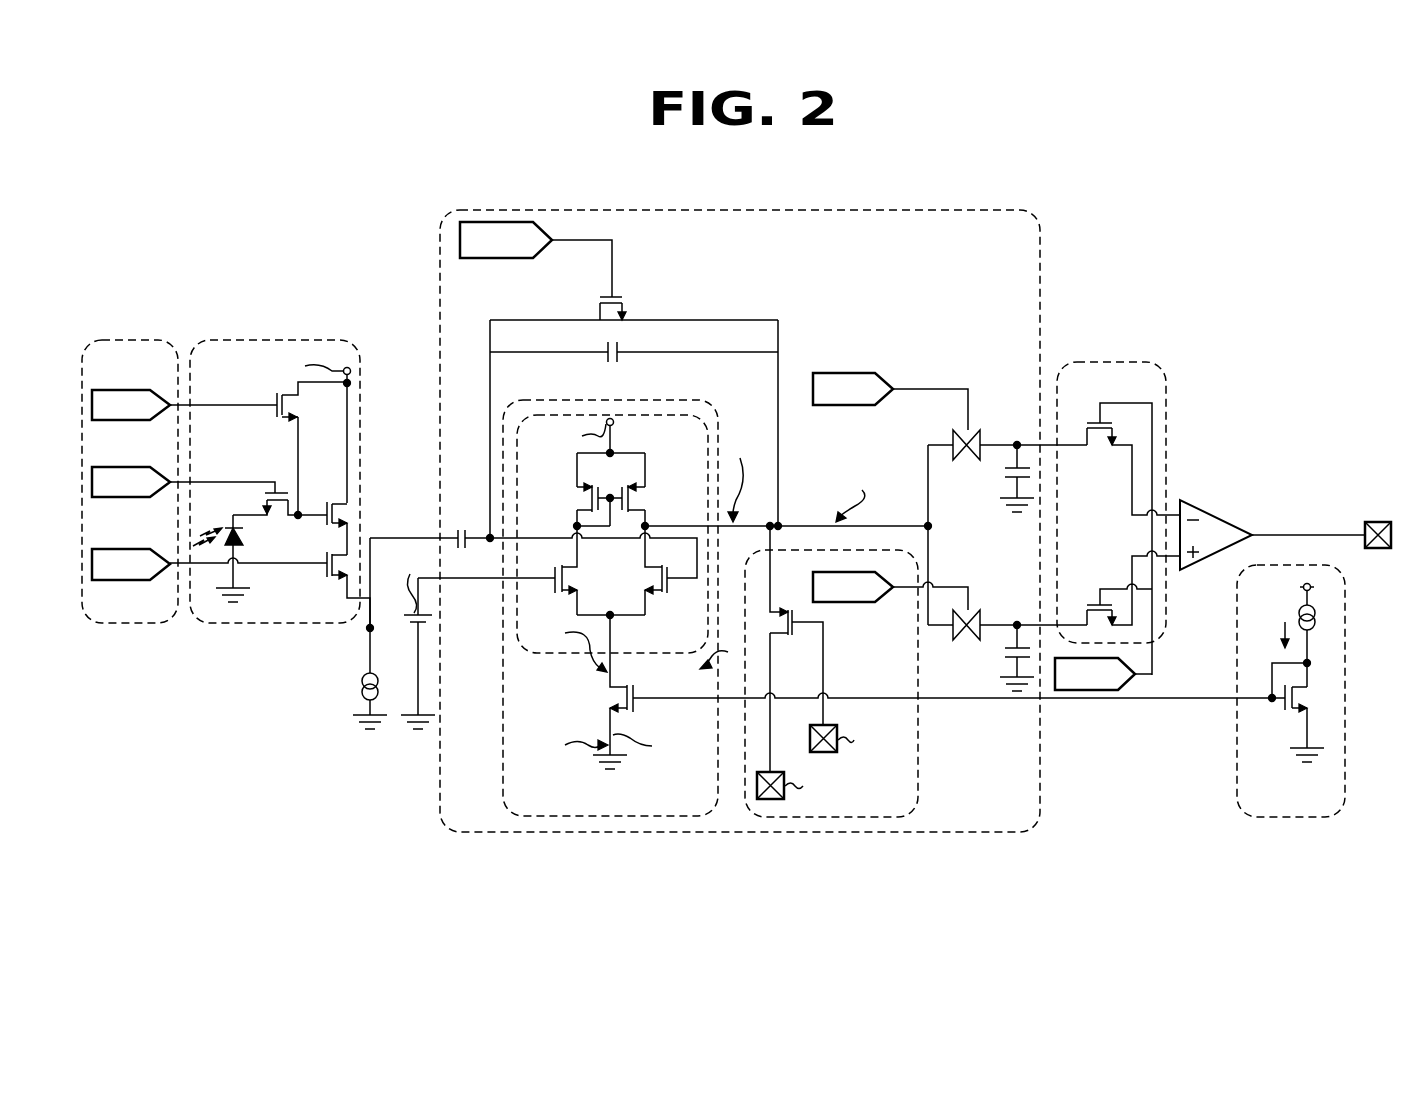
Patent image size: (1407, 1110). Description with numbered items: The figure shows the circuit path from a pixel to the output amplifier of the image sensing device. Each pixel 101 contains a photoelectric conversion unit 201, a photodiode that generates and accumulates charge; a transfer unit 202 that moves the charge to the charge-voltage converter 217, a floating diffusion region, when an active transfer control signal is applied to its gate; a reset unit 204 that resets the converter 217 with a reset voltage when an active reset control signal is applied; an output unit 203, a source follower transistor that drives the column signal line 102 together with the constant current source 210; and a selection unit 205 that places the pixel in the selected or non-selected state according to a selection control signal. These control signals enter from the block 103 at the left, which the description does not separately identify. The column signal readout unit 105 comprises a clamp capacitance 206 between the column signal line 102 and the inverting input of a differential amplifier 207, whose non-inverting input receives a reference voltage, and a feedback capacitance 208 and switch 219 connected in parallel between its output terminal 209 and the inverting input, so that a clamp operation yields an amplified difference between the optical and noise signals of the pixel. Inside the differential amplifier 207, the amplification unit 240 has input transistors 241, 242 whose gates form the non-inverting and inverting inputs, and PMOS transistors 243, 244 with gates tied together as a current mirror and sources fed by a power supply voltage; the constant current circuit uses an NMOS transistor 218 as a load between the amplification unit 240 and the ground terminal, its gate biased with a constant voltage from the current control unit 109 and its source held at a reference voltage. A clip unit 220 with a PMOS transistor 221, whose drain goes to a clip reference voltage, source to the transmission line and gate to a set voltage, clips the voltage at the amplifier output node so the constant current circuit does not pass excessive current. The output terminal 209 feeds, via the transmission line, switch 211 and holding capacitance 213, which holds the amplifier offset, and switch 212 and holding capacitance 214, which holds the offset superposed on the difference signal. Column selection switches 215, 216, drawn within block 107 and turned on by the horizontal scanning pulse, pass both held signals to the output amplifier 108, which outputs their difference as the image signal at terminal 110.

The pixel 101 is at (336, 336).
The column signal line 102 is at (368, 645).
The vertical scanning circuit signal lines 103 is at (142, 336).
The column signal readout unit 105 is at (1000, 209).
The switch unit 107 is at (1140, 361).
The output amplifier 108 is at (1219, 513).
The current control unit 109 is at (1346, 626).
The output terminal 110 is at (1380, 521).
The photoelectric conversion unit 201 is at (230, 527).
The transfer unit 202 is at (284, 490).
The output unit 203 is at (324, 524).
The reset unit 204 is at (278, 412).
The selection unit 205 is at (324, 578).
The clamp capacitance 206 is at (462, 531).
The differential amplifier 207 is at (684, 399).
The feedback capacitance 208 is at (606, 360).
The output terminal 209 is at (652, 526).
The constant current source 210 is at (363, 680).
The switch 211 is at (982, 440).
The switch 212 is at (982, 611).
The holding capacitance 213 is at (1006, 470).
The holding capacitance 214 is at (1006, 655).
The column selection switch 215 is at (1092, 420).
The column selection switch 216 is at (1093, 604).
The charge-voltage converter 217 is at (303, 497).
The NMOS transistor 218 is at (636, 695).
The switch 219 is at (622, 300).
The clip unit 220 is at (890, 549).
The MOS transistor 221 is at (786, 637).
The amplification unit 240 is at (548, 655).
The input transistor 241 is at (580, 585).
The input transistor 242 is at (666, 596).
The transistor 243 is at (586, 490).
The transistor 244 is at (636, 494).